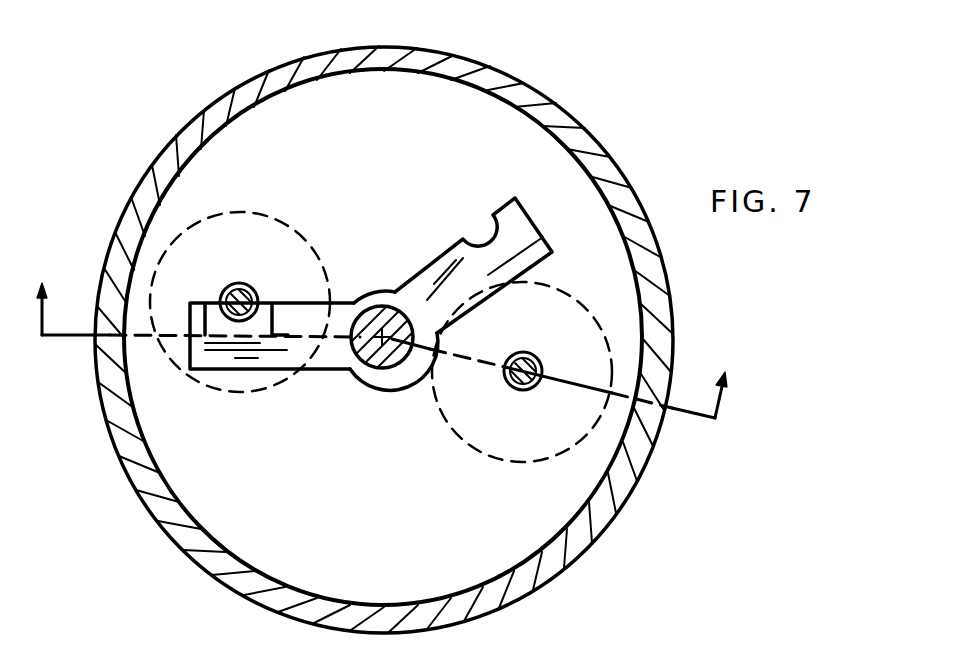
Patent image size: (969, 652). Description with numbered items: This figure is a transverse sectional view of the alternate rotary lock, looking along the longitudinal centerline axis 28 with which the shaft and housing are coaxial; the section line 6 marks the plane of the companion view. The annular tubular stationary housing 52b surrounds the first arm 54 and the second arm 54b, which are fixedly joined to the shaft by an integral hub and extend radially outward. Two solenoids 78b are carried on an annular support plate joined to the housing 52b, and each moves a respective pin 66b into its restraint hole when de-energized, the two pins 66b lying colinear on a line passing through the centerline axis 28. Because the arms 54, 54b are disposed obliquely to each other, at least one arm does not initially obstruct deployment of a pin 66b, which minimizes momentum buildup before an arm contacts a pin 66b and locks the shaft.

The housing 52b is at (587, 132).
The first arm 54 is at (320, 372).
The second arm 54b is at (443, 250).
The longitudinal centerline axis 28 is at (398, 345).
The solenoid 78b is at (277, 222).
The pin 66b is at (239, 283).
The section line 6- 6 is at (378, 353).